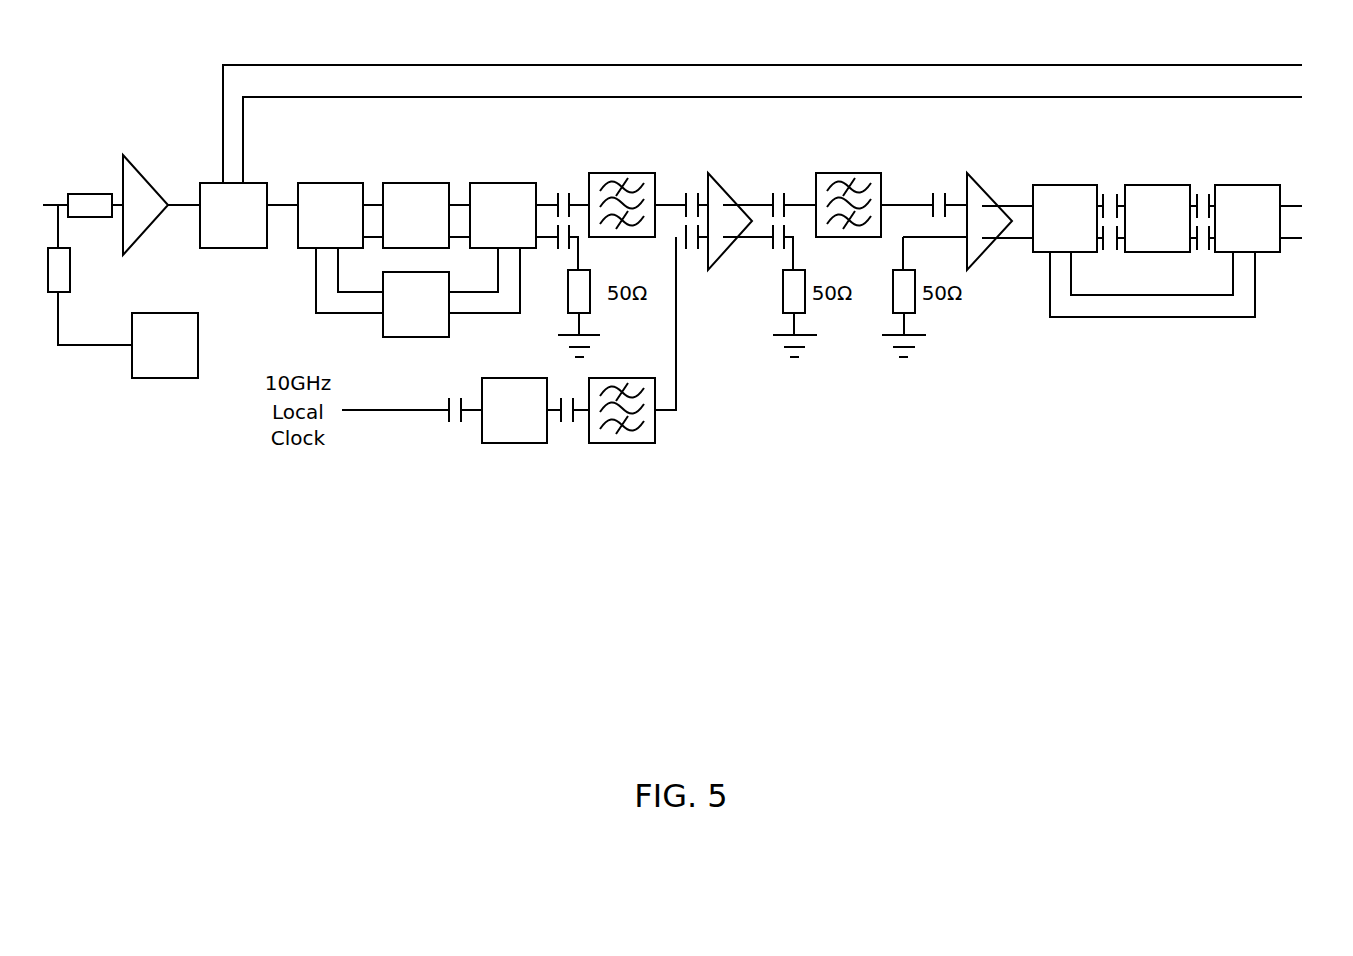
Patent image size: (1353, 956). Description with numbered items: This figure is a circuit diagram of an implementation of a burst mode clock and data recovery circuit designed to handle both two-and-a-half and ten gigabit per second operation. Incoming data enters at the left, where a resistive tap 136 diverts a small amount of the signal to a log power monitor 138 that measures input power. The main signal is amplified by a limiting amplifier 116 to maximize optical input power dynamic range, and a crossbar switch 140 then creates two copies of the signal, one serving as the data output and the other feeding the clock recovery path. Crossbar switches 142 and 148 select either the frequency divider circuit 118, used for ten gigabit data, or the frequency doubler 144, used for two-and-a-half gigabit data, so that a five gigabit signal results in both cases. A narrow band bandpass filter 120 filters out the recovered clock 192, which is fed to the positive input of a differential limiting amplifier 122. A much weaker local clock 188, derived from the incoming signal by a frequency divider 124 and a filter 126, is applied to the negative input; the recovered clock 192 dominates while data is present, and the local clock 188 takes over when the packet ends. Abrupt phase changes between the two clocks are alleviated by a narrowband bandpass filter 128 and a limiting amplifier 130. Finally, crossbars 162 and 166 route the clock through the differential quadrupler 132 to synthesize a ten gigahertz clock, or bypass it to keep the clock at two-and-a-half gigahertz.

The resistive tap 136 is at (83, 191).
The limiting amplifier 116 is at (154, 195).
The crossbar switch 140 is at (771, 144).
The crossbar switch 142 is at (340, 215).
The frequency divider circuit 118 is at (426, 202).
The crossbar switch 148 is at (514, 215).
The frequency doubler 144 is at (418, 306).
The narrow band bandpass filter 120 is at (637, 188).
The recovered clock 192 is at (684, 195).
The limiting amplifier 122 is at (739, 205).
The local clock 188 is at (687, 323).
The narrowband bandpass filter 128 is at (891, 188).
The limiting amplifier 130 is at (997, 205).
The crossbar 162 is at (1144, 251).
The differential quadrupler 132 is at (1170, 204).
The crossbar 166 is at (1280, 216).
The log power monitor 138 is at (137, 354).
The frequency divider 124 is at (535, 424).
The filter 126 is at (622, 424).